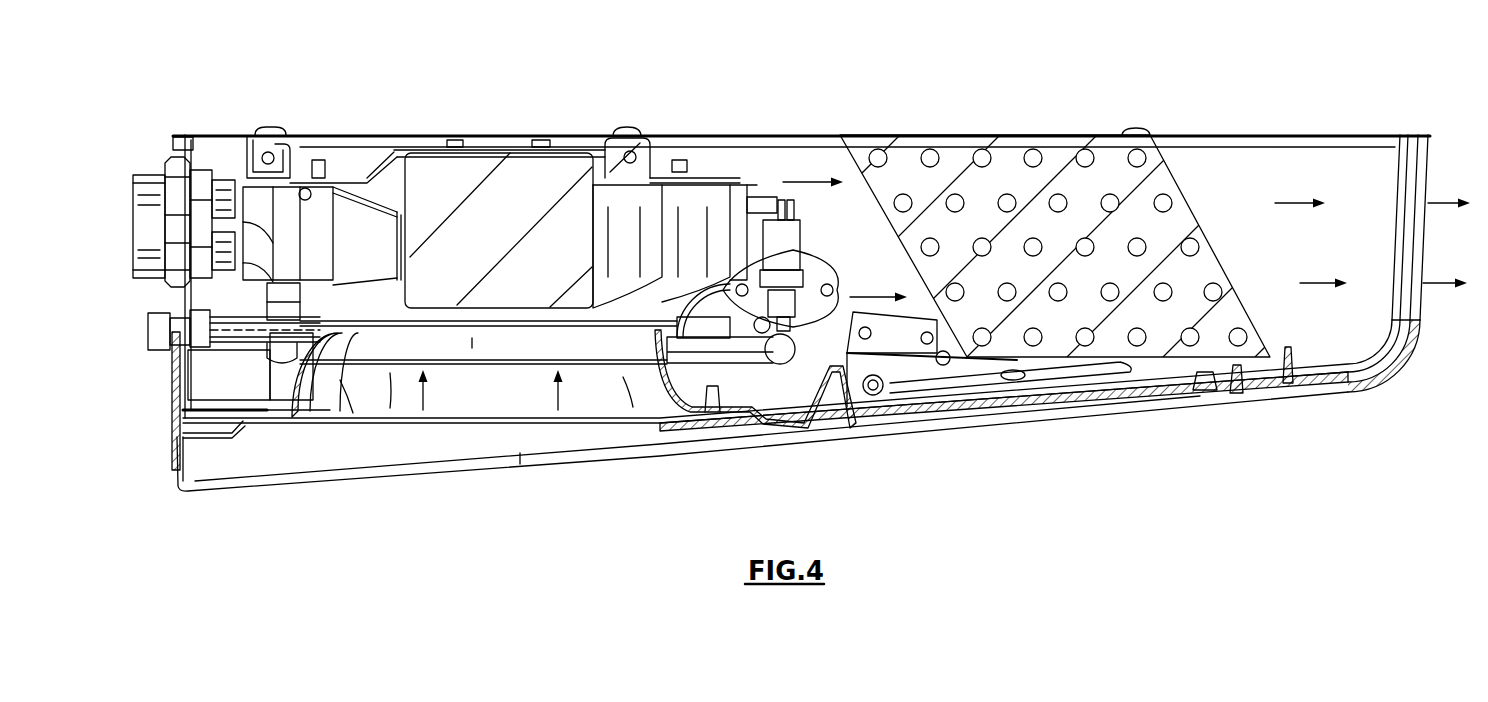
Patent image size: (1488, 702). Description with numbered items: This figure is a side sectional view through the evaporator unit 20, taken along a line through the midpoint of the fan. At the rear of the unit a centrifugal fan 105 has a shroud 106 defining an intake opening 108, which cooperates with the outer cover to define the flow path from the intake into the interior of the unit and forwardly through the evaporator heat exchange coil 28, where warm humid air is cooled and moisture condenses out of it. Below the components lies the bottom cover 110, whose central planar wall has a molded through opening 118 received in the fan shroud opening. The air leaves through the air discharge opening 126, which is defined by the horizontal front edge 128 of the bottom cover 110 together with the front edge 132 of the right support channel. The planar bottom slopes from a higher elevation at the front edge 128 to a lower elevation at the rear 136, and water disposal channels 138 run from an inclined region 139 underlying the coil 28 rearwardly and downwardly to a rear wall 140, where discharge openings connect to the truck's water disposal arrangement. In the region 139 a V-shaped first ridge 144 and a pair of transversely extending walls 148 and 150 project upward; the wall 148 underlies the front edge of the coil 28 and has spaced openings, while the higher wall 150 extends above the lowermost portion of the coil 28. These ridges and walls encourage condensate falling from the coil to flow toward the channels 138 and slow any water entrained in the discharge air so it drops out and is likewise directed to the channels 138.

The evaporator unit 20 is at (812, 66).
The evaporator heat exchange coil 28 is at (1052, 144).
The centrifugal fan 105 is at (587, 247).
The shroud 106 is at (332, 315).
The intake opening 108 is at (352, 330).
The bottom cover 110 is at (991, 441).
The through opening 118 is at (655, 332).
The air discharge opening 126 is at (1427, 145).
The front edge 128 is at (1412, 352).
The front edge of right support channel 132 is at (1385, 235).
The rear 136 is at (161, 474).
The water disposal channels 138 is at (268, 486).
The inclined region 139 is at (913, 405).
The rear wall 140 is at (182, 356).
The first ridge 144 is at (1073, 395).
The transverse wall 148 is at (1227, 393).
The transverse wall 150 is at (1287, 350).